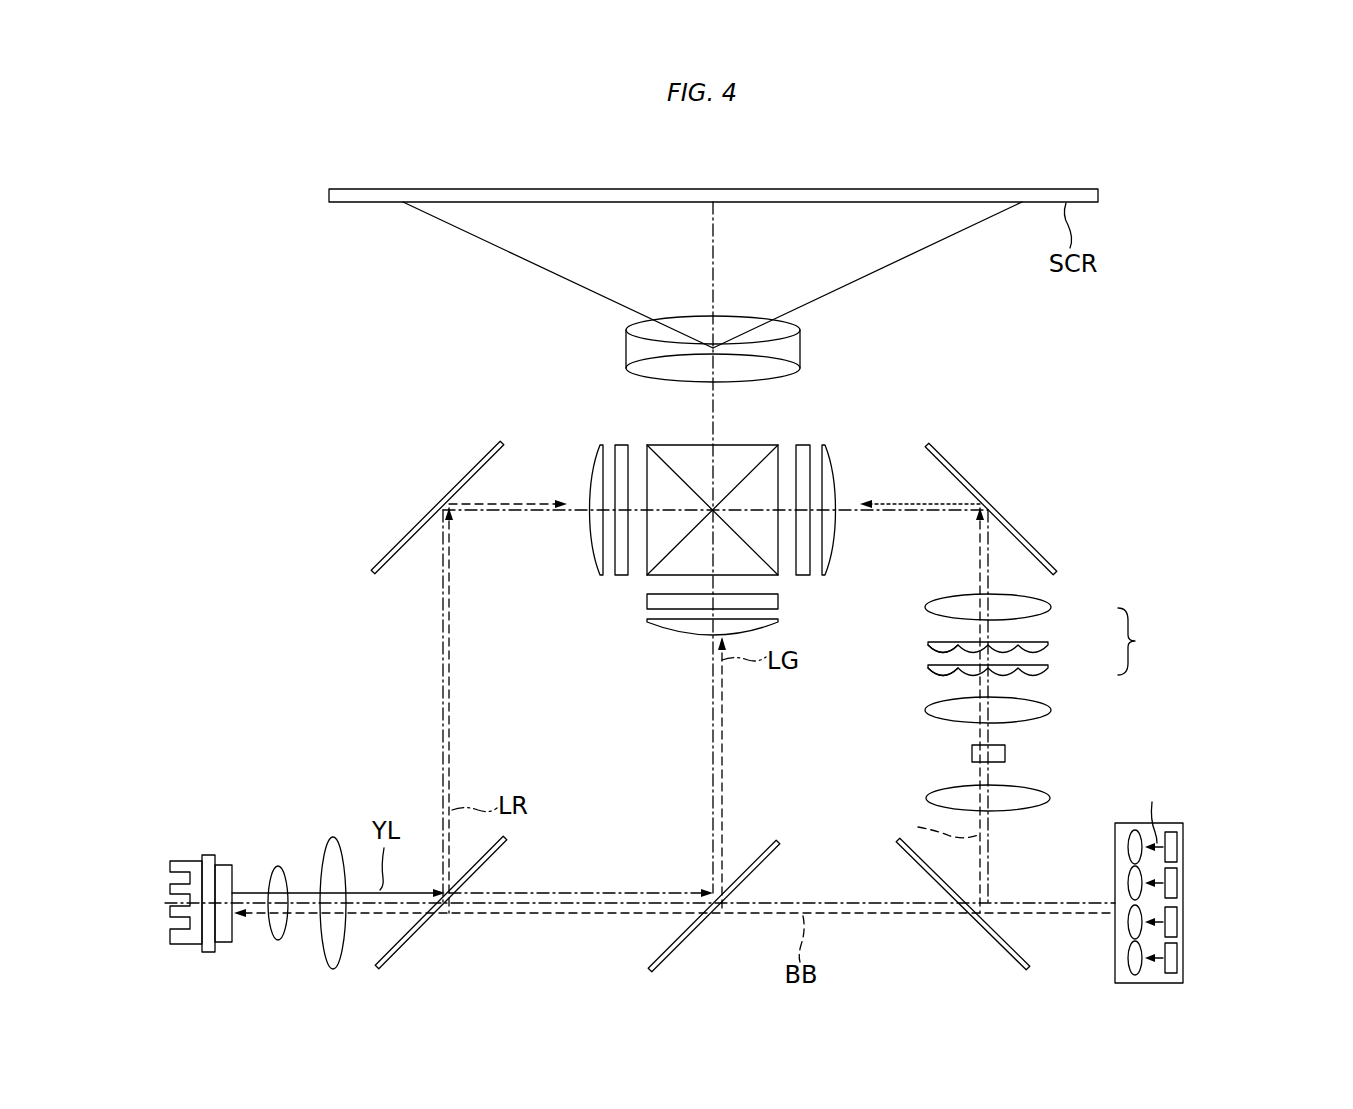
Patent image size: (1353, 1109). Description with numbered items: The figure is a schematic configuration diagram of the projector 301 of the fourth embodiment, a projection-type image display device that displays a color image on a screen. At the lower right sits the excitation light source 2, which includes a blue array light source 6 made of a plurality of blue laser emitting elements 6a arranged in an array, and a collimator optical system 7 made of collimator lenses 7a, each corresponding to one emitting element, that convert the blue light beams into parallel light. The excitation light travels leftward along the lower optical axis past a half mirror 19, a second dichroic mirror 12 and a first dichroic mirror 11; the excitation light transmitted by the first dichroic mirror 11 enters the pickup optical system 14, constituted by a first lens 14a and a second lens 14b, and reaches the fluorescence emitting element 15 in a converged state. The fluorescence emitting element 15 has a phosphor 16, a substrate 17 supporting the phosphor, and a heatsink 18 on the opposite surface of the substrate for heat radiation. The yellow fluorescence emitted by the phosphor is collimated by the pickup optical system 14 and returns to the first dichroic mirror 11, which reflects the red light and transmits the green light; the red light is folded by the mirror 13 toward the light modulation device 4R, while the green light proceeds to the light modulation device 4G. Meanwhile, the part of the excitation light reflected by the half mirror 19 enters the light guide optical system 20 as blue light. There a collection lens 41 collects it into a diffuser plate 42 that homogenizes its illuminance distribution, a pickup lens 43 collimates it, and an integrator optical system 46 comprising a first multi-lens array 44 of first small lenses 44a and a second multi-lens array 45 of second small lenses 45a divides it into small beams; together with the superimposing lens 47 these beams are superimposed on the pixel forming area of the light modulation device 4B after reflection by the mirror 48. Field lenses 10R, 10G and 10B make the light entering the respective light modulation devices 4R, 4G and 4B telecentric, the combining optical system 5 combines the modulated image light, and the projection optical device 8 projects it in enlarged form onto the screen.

The projector 301 is at (1094, 178).
The projection optical device 8 is at (790, 342).
The combining optical system 5 is at (735, 452).
The light modulation device 4R is at (622, 452).
The light modulation device 4G is at (650, 602).
The light modulation device 4B is at (803, 452).
The field lens 10R is at (597, 452).
The field lens 10G is at (656, 627).
The field lens 10B is at (829, 452).
The mirror 13 is at (415, 526).
The mirror 48 is at (1010, 522).
The light guide optical system 20 is at (1152, 573).
The superimposing lens 47 is at (1037, 605).
The integrator optical system 46 is at (1147, 641).
The second multi-lens array 45 is at (1040, 644).
The second small lens 45a is at (935, 650).
The first multi-lens array 44 is at (1040, 668).
The first small lens 44a is at (935, 673).
The pickup lens 43 is at (1037, 709).
The diffuser plate 42 is at (1000, 756).
The collection lens 41 is at (1018, 793).
The half mirror 19 is at (912, 858).
The excitation light source 2 is at (1156, 872).
The collimator optical system 7 is at (1100, 868).
The collimator lens 7a is at (1127, 850).
The blue array light source 6 is at (1202, 867).
The blue laser emitting element 6a is at (1178, 843).
The second dichroic mirror 12 is at (773, 858).
The first dichroic mirror 11 is at (497, 858).
The fluorescence emitting element 15 is at (188, 780).
The heatsink 18 is at (182, 861).
The substrate 17 is at (208, 855).
The phosphor 16 is at (225, 866).
The pickup optical system 14 is at (360, 772).
The first lens 14a is at (283, 868).
The second lens 14b is at (336, 842).